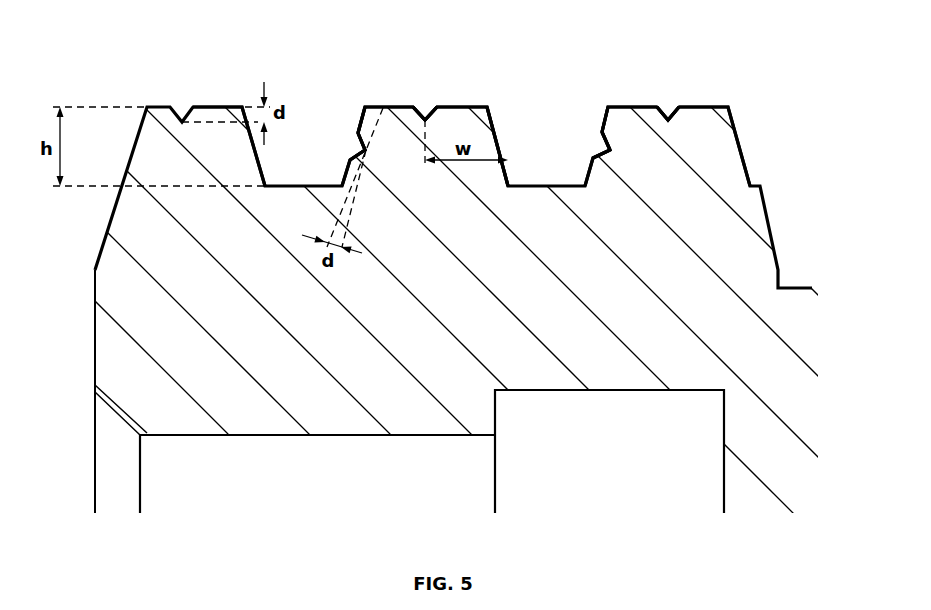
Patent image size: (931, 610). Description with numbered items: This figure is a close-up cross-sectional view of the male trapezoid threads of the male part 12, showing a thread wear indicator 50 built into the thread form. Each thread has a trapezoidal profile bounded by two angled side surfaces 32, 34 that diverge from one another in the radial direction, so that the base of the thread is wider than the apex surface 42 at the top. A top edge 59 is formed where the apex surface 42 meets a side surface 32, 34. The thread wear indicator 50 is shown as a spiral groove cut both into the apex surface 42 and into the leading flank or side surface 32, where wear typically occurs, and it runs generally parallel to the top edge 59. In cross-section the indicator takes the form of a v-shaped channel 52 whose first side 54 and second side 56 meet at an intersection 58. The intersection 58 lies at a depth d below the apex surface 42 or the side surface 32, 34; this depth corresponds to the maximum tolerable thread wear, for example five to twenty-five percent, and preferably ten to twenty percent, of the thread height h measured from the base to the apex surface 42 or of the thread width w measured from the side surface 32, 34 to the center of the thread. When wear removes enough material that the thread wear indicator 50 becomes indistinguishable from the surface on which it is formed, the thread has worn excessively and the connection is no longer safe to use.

The male part 12 is at (793, 288).
The side surface 32 is at (364, 107).
The side surface 34 is at (492, 119).
The apex surface 42 is at (470, 107).
The thread wear indicator 50 is at (336, 126).
The v-shaped channel 52 is at (355, 154).
The first side 54 is at (600, 154).
The second side 56 is at (603, 137).
The intersection 58 is at (670, 123).
The top edge 59 is at (243, 107).